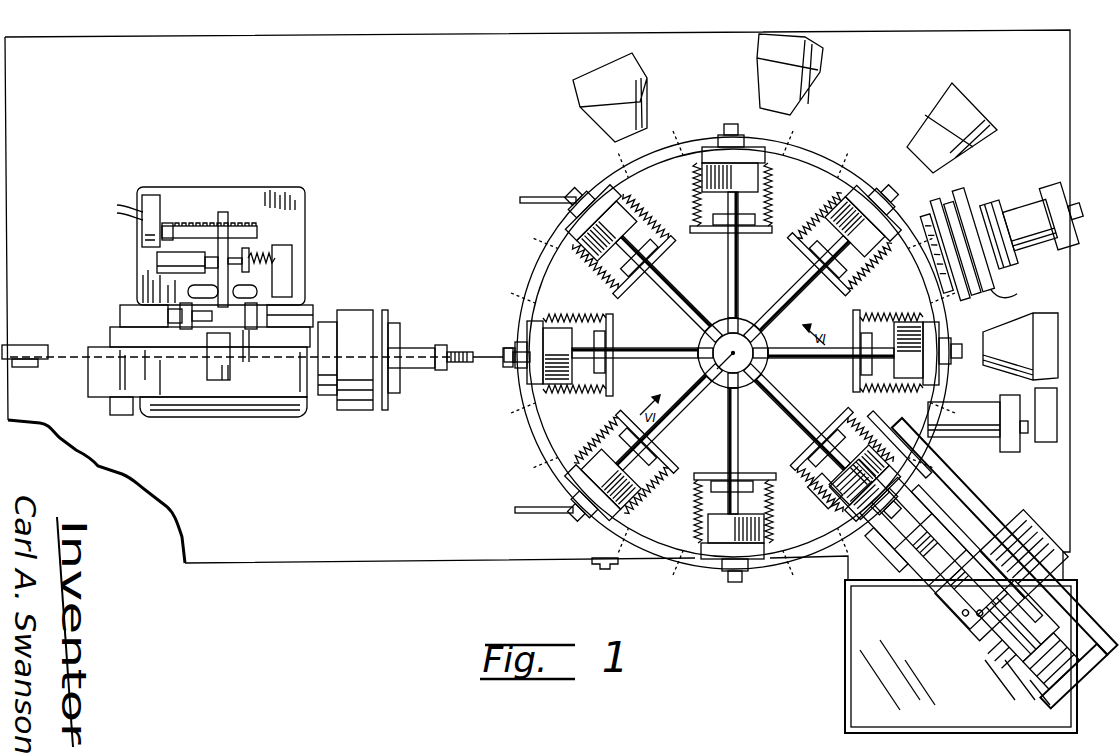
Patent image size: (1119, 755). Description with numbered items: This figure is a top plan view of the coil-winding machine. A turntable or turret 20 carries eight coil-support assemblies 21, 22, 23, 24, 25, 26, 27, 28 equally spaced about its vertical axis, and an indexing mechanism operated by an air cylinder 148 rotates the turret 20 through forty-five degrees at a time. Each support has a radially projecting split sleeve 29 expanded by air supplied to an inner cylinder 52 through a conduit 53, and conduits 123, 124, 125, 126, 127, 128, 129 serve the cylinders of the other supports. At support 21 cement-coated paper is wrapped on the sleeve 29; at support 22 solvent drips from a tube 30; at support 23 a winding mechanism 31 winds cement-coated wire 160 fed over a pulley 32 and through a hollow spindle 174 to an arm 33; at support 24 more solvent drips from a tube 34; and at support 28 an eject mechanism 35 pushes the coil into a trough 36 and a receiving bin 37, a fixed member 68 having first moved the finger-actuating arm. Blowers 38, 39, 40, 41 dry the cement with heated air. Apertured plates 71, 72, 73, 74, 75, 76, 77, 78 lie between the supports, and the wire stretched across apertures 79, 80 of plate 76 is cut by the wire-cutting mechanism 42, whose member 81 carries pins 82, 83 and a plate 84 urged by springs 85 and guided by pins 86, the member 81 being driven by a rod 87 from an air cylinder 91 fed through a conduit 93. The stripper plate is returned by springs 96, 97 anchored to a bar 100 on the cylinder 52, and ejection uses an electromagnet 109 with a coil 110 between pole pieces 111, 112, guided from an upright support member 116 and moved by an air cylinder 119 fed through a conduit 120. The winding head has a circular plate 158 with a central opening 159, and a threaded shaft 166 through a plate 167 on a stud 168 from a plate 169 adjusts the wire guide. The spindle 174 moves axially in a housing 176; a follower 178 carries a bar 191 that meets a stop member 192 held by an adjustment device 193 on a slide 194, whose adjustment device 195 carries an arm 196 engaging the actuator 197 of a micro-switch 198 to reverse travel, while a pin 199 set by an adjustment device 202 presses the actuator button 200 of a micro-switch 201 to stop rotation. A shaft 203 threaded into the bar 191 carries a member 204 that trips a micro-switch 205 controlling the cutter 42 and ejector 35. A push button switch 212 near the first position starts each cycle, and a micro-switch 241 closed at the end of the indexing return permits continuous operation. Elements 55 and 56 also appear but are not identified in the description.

The turntable or turret 20 is at (522, 272).
The coil-support assembly 21 is at (805, 554).
The coil-support assembly 22 is at (558, 480).
The coil-support assembly 23 is at (515, 328).
The coil-support assembly 24 is at (598, 188).
The coil-support assembly 25 is at (712, 138).
The coil-support assembly 26 is at (866, 180).
The coil-support assembly 27 is at (950, 322).
The coil-support assembly 28 is at (918, 458).
The split sleeve 29 is at (737, 575).
The tube 30 is at (528, 514).
The winding mechanism 31 is at (360, 410).
The pulley 32 is at (35, 368).
The arm 33 is at (490, 362).
The tube 34 is at (532, 197).
The eject mechanism 35 is at (965, 605).
The trough 36 is at (846, 543).
The receiving bin 37 is at (860, 642).
The blower 38 is at (647, 100).
The blower 39 is at (815, 90).
The blower 40 is at (925, 118).
The blower 41 is at (1045, 330).
The wire-cutting mechanism 42 is at (995, 188).
The inner cylinder 52 is at (702, 333).
The conduit 53 is at (740, 445).
The bracket 55 is at (861, 562).
The bracket 56 is at (905, 488).
The fixed member 68 is at (985, 495).
The apertured plate 71 is at (659, 497).
The apertured plate 72 is at (577, 415).
The apertured plate 73 is at (579, 297).
The apertured plate 74 is at (664, 198).
The apertured plate 75 is at (802, 195).
The apertured plate 76 is at (874, 283).
The apertured plate 77 is at (885, 404).
The apertured plate 78 is at (797, 511).
The aperture 79 is at (732, 350).
The aperture 80 is at (701, 348).
The member 81 is at (970, 215).
The pin 82 is at (950, 222).
The pin 83 is at (980, 283).
The plate 84 is at (937, 225).
The spring 85 is at (975, 300).
The pin 86 is at (995, 220).
The rod 87 is at (1030, 224).
The air cylinder 91 is at (1050, 205).
The conduit 93 is at (1075, 215).
The spring 96 is at (736, 351).
The spring 97 is at (743, 365).
The bar 100 is at (745, 430).
The electromagnet 109 is at (935, 600).
The coil 110 is at (945, 545).
The pole piece 111 is at (948, 510).
The pole piece 112 is at (905, 570).
The upright support member 116 is at (1010, 545).
The air cylinder 119 is at (1015, 640).
The conduit 120 is at (1045, 660).
The conduit 123 is at (665, 398).
The conduit 124 is at (622, 345).
The conduit 125 is at (678, 290).
The conduit 126 is at (742, 252).
The conduit 127 is at (805, 265).
The conduit 128 is at (840, 345).
The conduit 129 is at (810, 418).
The air cylinder 148 is at (958, 405).
The circular plate 158 is at (345, 312).
The central opening 159 is at (352, 360).
The wire 160 is at (90, 355).
The threaded shaft 166 is at (460, 352).
The plate 167 is at (440, 345).
The stud 168 is at (410, 365).
The plate 169 is at (387, 312).
The hollow spindle 174 is at (199, 372).
The housing 176 is at (262, 255).
The follower 178 is at (240, 290).
The bar 191 is at (228, 215).
The stop member 192 is at (186, 310).
The adjustment device 193 is at (130, 312).
The slide 194 is at (262, 305).
The adjustment device 195 is at (300, 312).
The arm 196 is at (230, 370).
The actuator 197 is at (245, 365).
The micro-switch 198 is at (225, 380).
The pin 199 is at (236, 258).
The actuator button 200 is at (248, 250).
The micro-switch 201 is at (290, 262).
The adjustment device 202 is at (160, 262).
The shaft 203 is at (215, 223).
The member 204 is at (180, 223).
The micro-switch 205 is at (150, 195).
The push button switch 212 is at (595, 570).
The micro-switch 241 is at (1050, 410).